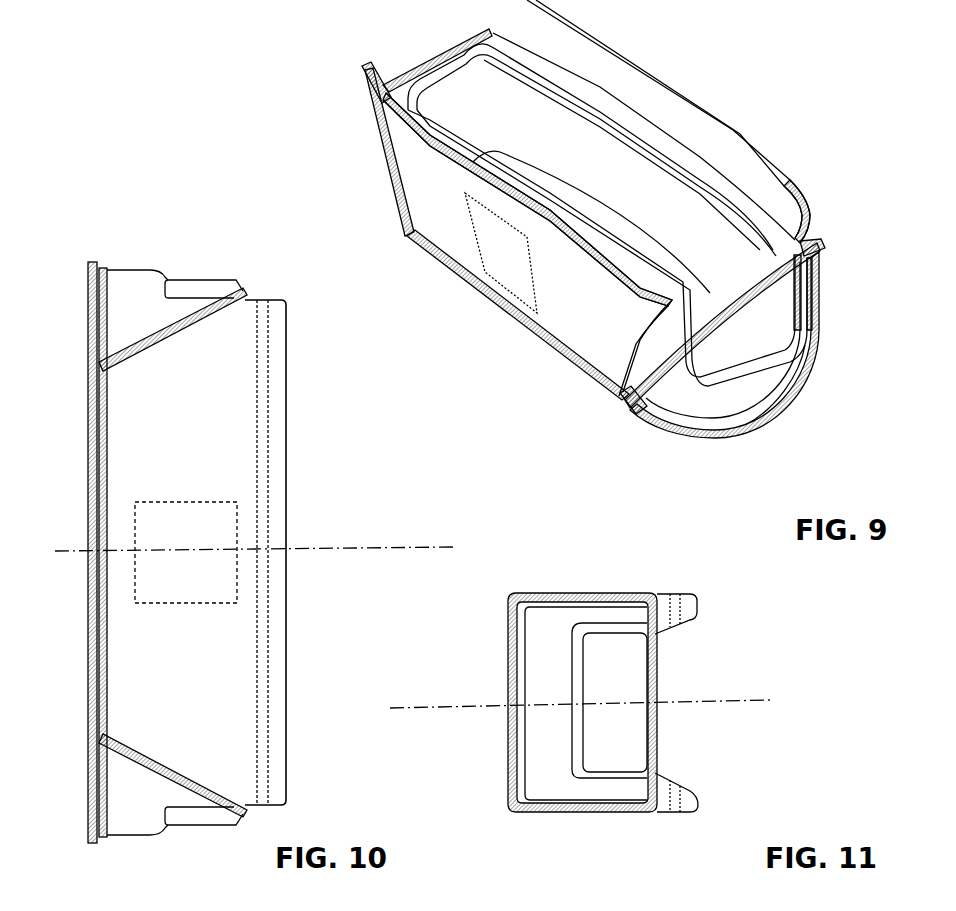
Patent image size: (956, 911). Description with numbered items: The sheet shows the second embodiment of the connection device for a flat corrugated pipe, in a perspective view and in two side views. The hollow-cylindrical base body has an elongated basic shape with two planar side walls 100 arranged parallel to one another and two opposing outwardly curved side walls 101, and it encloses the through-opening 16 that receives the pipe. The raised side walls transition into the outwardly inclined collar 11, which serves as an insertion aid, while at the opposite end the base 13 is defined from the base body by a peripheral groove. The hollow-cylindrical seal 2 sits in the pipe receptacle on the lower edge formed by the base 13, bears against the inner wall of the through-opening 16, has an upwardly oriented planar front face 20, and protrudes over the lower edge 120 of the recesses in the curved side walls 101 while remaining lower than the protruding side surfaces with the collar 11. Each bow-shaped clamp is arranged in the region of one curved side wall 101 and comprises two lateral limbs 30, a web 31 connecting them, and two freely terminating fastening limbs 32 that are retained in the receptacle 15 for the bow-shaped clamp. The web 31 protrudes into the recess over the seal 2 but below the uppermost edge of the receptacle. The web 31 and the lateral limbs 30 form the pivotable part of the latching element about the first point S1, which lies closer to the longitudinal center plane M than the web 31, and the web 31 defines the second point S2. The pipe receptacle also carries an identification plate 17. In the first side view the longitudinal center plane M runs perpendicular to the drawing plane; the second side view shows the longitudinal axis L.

In FIG. 9, the seal 2 is at (787, 293).
In FIG. 10, the seal 2 is at (200, 293).
In FIG. 11, the seal 2 is at (618, 759).
In FIG. 9, the collar 11 is at (773, 153).
In FIG. 11, the collar 11 is at (695, 812).
In FIG. 9, the base 13 is at (713, 432).
In FIG. 10, the base 13 is at (99, 810).
In FIG. 11, the base 13 is at (510, 772).
In FIG. 10, the receptacle for the bow-shaped clamp 15 is at (101, 492).
In FIG. 9, the through-opening 16 is at (606, 233).
In FIG. 10, the identification plate 17 is at (200, 538).
In FIG. 9, the planar front face 20 is at (667, 145).
In FIG. 9, the lateral limbs 30 is at (378, 152).
In FIG. 10, the lateral limbs 30 is at (140, 347).
In FIG. 11, the lateral limbs 30 is at (579, 600).
In FIG. 9, the web 31 is at (444, 54).
In FIG. 11, the web 31 is at (657, 668).
In FIG. 9, the fastening limbs 32 is at (407, 233).
In FIG. 11, the fastening limbs 32 is at (508, 625).
In FIG. 9, the planar side walls 100 is at (542, 34).
In FIG. 10, the planar side walls 100 is at (212, 433).
In FIG. 9, the curved side walls 101 is at (773, 375).
In FIG. 9, the lower edge 120 is at (793, 328).
In FIG. 11, the lower edge 120 is at (577, 778).
In FIG. 10, the longitudinal center plane M is at (380, 547).
In FIG. 11, the longitudinal axis L is at (775, 697).
In FIG. 10, the first point S1 is at (92, 357).
In FIG. 10, the second point S2 is at (250, 276).